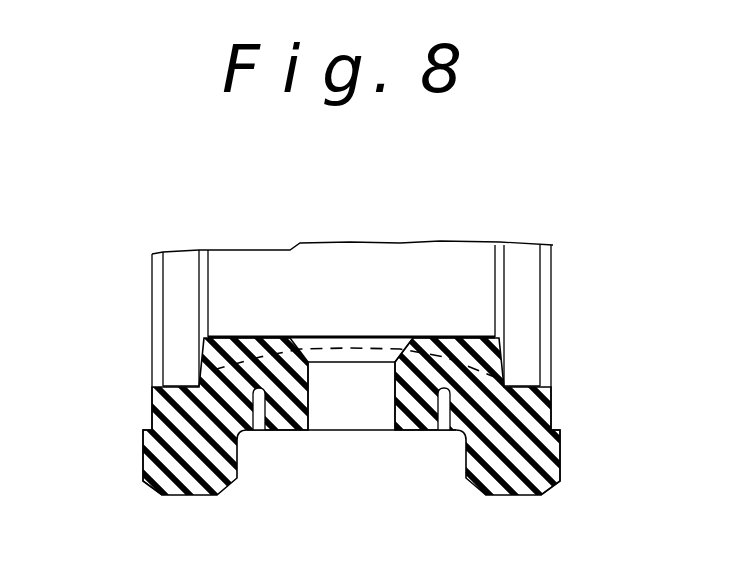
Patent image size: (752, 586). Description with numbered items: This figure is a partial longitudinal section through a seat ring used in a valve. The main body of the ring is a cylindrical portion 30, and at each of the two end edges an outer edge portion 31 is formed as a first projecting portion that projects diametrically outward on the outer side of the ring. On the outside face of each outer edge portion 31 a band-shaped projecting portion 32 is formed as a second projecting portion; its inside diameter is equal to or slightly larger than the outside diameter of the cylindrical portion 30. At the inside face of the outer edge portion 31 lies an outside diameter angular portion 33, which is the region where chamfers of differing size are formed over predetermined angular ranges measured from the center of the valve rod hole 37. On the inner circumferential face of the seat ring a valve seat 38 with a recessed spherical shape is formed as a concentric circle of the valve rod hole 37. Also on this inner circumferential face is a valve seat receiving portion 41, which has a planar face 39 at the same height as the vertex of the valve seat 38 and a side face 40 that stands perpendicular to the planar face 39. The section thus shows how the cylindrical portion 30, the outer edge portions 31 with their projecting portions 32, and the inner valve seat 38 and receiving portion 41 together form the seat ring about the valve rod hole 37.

The cylindrical portion 30 is at (245, 336).
The outer edge portion 31 is at (178, 496).
The projecting portion 32 is at (143, 455).
The outside diameter angular portion 33 is at (477, 484).
The valve rod hole 37 is at (330, 410).
The valve seat 38 is at (410, 339).
The planar face 39 is at (462, 336).
The side face 40 is at (507, 357).
The valve seat receiving portion 41 is at (276, 338).